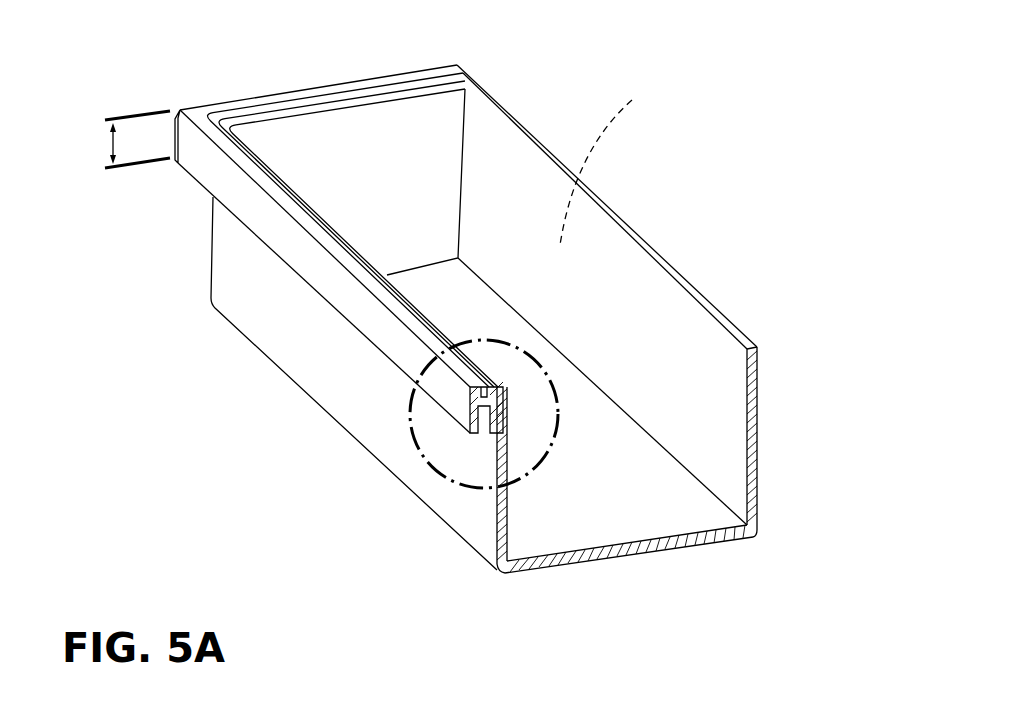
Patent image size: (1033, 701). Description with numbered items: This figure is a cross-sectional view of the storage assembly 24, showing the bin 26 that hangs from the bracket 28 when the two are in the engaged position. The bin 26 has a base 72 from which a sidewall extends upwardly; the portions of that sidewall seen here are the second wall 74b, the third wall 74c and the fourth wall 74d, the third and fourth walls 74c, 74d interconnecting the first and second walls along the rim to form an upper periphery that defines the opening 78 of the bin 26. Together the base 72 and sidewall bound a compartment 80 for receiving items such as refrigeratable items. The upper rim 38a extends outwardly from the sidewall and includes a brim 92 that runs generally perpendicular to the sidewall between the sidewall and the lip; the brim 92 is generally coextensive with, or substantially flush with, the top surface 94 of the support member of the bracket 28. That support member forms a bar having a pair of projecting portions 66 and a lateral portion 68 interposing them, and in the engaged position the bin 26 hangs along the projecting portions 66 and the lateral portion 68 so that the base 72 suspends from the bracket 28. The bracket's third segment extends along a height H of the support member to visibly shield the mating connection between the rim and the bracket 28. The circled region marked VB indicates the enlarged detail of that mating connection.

The storage assembly 24 is at (537, 70).
The bin 26 is at (610, 195).
The bracket 28 is at (430, 55).
The upper rim 38a is at (460, 325).
The projecting portions 66 is at (253, 97).
The lateral portion 68 is at (315, 263).
The base 72 is at (663, 547).
The second wall 74b is at (343, 147).
The third wall 74c is at (313, 352).
The fourth wall 74d is at (693, 340).
The opening 78 is at (608, 162).
The compartment 80 is at (413, 224).
The brim 92 is at (300, 100).
The top surface 94 is at (191, 108).
The height H is at (119, 156).
The detail view indicator VB is at (422, 453).